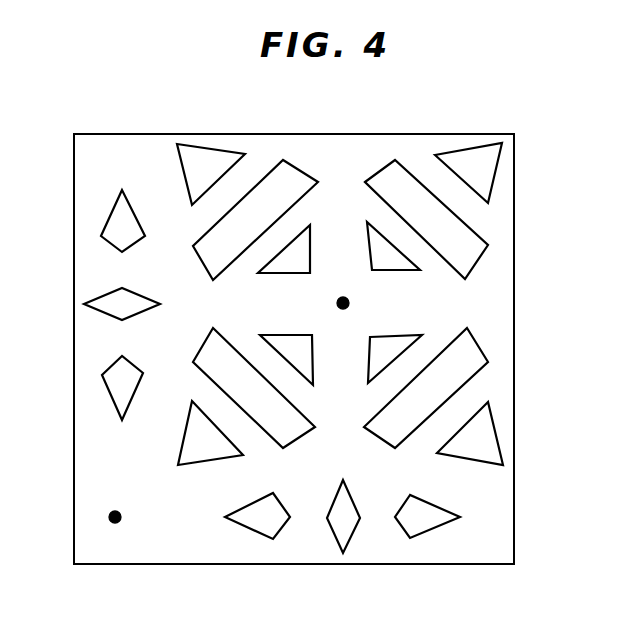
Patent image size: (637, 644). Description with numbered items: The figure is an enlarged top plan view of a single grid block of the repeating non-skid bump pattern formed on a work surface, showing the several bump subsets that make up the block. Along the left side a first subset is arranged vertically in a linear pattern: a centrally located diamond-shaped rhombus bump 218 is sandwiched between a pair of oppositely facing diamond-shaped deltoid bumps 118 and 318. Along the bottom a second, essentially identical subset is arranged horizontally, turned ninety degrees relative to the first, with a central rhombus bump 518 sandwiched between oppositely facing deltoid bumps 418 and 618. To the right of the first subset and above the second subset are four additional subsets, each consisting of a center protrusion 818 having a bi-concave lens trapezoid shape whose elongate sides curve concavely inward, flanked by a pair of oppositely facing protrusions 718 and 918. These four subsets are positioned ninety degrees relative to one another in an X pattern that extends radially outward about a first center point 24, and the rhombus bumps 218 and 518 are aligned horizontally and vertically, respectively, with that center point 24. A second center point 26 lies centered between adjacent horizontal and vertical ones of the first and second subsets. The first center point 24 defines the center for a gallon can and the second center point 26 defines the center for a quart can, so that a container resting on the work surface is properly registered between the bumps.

The first center point 24 is at (343, 293).
The second center point 26 is at (115, 524).
The deltoid bump 118 is at (118, 224).
The rhombus bump 218 is at (113, 298).
The deltoid bump 318 is at (118, 376).
The deltoid bump 418 is at (257, 520).
The rhombus bump 518 is at (343, 522).
The deltoid bump 618 is at (423, 520).
The protrusion 718 is at (198, 163).
The center protrusion 818 is at (272, 182).
The protrusion 918 is at (305, 250).